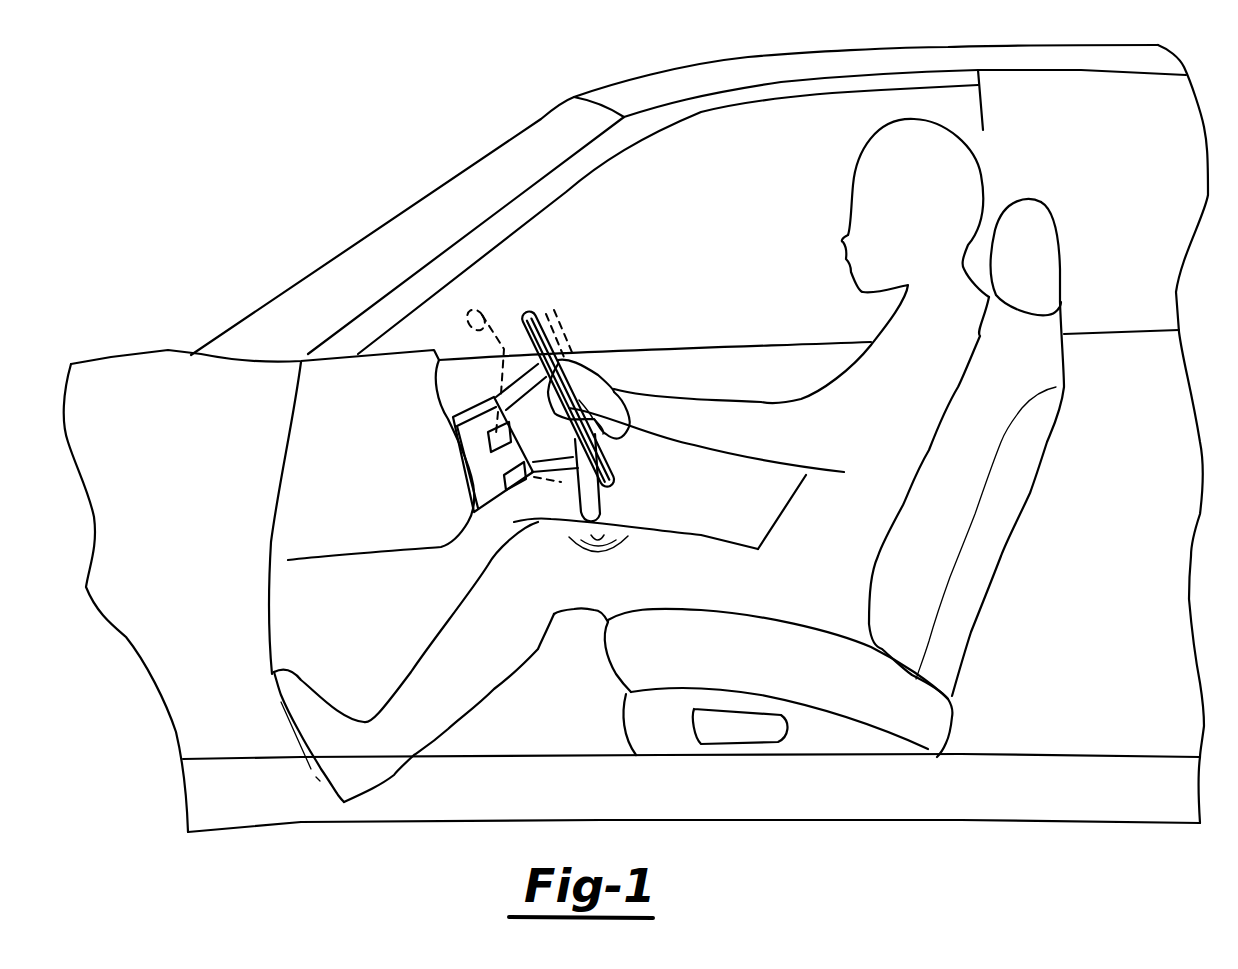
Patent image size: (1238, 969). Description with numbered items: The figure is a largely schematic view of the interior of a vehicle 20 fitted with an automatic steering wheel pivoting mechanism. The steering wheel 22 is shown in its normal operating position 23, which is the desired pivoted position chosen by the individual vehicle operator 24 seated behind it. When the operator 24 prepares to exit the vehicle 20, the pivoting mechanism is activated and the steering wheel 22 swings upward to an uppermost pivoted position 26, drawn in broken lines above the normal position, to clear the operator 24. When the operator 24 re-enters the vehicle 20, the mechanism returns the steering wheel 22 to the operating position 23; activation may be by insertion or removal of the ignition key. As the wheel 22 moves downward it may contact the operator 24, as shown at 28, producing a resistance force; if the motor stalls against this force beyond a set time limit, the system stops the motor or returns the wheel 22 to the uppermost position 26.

The vehicle 20 is at (141, 396).
The steering wheel 22 is at (522, 302).
The normal operating position 23 is at (620, 485).
The vehicle operator 24 is at (925, 376).
The uppermost pivoted position 26 is at (480, 326).
The contact point with operator 28 is at (513, 520).